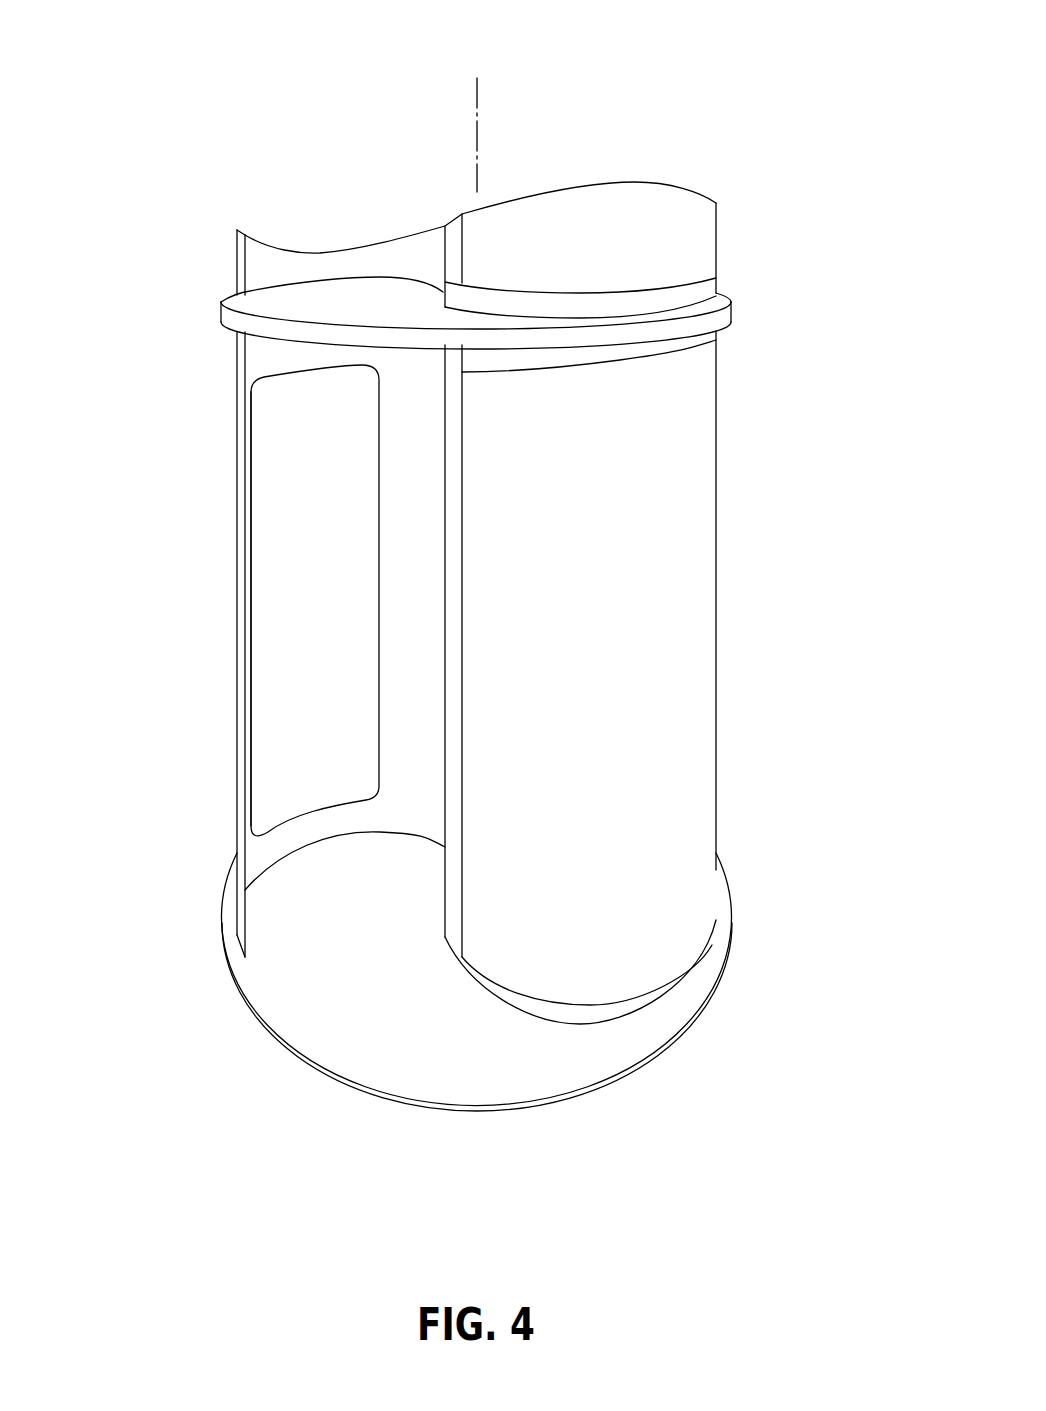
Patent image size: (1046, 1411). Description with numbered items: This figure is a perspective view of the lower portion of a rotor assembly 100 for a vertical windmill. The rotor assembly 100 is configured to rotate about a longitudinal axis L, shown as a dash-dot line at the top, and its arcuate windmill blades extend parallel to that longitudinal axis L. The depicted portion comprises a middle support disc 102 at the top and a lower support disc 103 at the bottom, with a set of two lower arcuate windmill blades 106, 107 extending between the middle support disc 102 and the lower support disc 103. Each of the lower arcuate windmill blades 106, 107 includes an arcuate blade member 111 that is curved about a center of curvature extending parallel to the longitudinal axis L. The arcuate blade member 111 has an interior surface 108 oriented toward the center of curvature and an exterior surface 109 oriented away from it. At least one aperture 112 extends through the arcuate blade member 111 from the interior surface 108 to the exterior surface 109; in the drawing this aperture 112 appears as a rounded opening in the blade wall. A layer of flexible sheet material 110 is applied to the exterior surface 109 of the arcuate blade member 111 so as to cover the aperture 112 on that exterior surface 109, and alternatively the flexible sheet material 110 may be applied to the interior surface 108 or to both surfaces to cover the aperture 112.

The rotor assembly 100 is at (707, 122).
The longitudinal axis L is at (477, 133).
The middle support disc 102 is at (722, 318).
The lower support disc 103 is at (650, 1043).
The lower arcuate windmill blade 106 is at (237, 382).
The lower arcuate windmill blade 107 is at (697, 383).
The interior surface 108 is at (395, 723).
The exterior surface 109 is at (235, 935).
The layer of flexible sheet material 110 is at (688, 582).
The arcuate blade member 111 is at (395, 817).
The aperture 112 is at (312, 614).